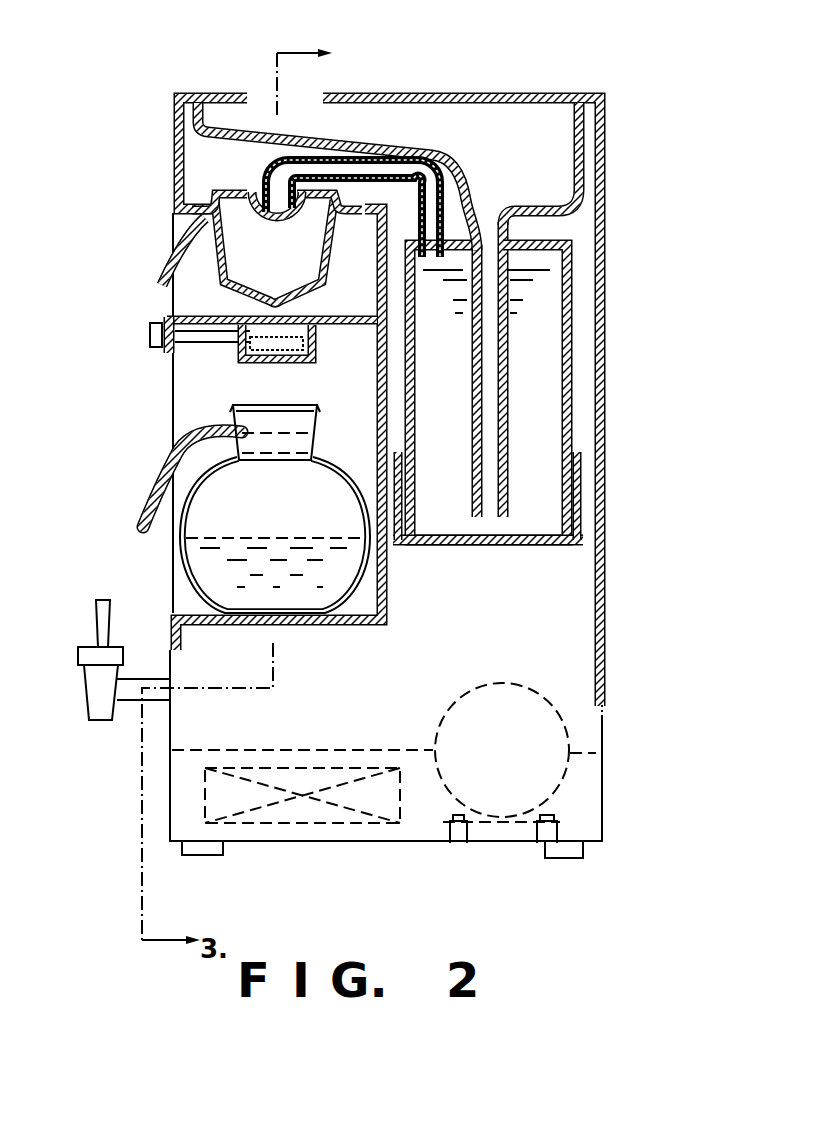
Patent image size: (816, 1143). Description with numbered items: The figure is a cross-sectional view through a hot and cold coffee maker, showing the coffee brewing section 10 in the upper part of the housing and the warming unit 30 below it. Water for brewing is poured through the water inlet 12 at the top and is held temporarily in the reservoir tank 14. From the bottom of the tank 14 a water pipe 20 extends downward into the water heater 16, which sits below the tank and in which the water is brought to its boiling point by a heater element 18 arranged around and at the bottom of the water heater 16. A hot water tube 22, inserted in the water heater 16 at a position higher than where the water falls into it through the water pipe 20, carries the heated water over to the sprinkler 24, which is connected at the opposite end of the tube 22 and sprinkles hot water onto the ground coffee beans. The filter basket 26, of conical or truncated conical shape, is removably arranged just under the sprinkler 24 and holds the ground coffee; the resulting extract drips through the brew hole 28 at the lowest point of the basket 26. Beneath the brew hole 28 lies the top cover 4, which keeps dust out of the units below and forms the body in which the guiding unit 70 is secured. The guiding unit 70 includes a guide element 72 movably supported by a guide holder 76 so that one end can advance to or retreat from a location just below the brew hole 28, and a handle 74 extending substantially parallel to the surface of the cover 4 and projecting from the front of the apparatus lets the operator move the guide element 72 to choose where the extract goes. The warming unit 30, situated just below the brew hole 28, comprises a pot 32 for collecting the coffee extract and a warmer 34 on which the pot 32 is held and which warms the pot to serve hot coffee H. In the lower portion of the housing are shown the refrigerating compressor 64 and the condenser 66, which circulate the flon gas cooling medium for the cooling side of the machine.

The top cover 4 is at (172, 316).
The coffee brewing section 10 is at (549, 568).
The water inlet 12 is at (263, 100).
The reservoir tank 14 is at (553, 157).
The water heater 16 is at (570, 268).
The heater element 18 is at (578, 497).
The water pipe 20 is at (508, 378).
The hot water tube 22 is at (373, 135).
The sprinkler 24 is at (268, 182).
The filter basket 26 is at (175, 260).
The brew hole 28 is at (290, 312).
The warming unit 30 is at (148, 545).
The pot 32 is at (323, 470).
The warmer 34 is at (210, 612).
The refrigerating compressor 64 is at (568, 757).
The condenser 66 is at (205, 808).
The guiding unit 70 is at (326, 342).
The guide element 72 is at (258, 355).
The handle 74 is at (175, 348).
The guide holder 76 is at (266, 360).
The hot coffee H is at (333, 568).